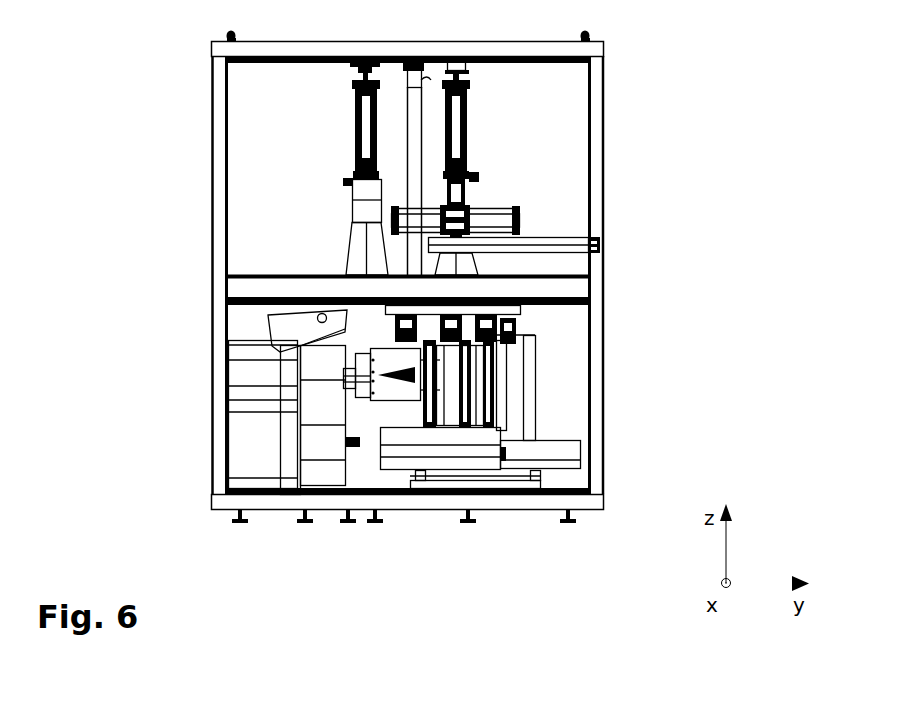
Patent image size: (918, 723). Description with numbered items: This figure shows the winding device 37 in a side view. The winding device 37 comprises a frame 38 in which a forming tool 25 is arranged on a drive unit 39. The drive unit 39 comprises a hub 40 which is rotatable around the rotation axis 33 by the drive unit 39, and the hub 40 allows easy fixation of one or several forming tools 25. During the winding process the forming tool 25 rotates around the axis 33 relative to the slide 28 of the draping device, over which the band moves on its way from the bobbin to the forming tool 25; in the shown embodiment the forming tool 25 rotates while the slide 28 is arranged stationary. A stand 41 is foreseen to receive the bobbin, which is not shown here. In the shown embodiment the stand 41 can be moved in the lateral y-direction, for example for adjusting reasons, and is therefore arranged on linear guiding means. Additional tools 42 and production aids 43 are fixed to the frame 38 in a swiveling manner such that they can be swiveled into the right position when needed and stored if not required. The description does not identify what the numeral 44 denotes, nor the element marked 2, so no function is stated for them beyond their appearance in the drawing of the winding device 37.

The winding device 37 is at (316, 86).
The frame 38 is at (323, 268).
The drive unit 39 is at (253, 421).
The hub 40 is at (437, 515).
The stand 41 is at (460, 541).
The additional tools 42 is at (565, 240).
The production aids 43 is at (541, 167).
The base plate 44 is at (409, 557).
The gripper 2 is at (537, 334).
The forming tool 25 is at (581, 375).
The rotation axis 33 is at (588, 384).
The slide 28 is at (618, 396).